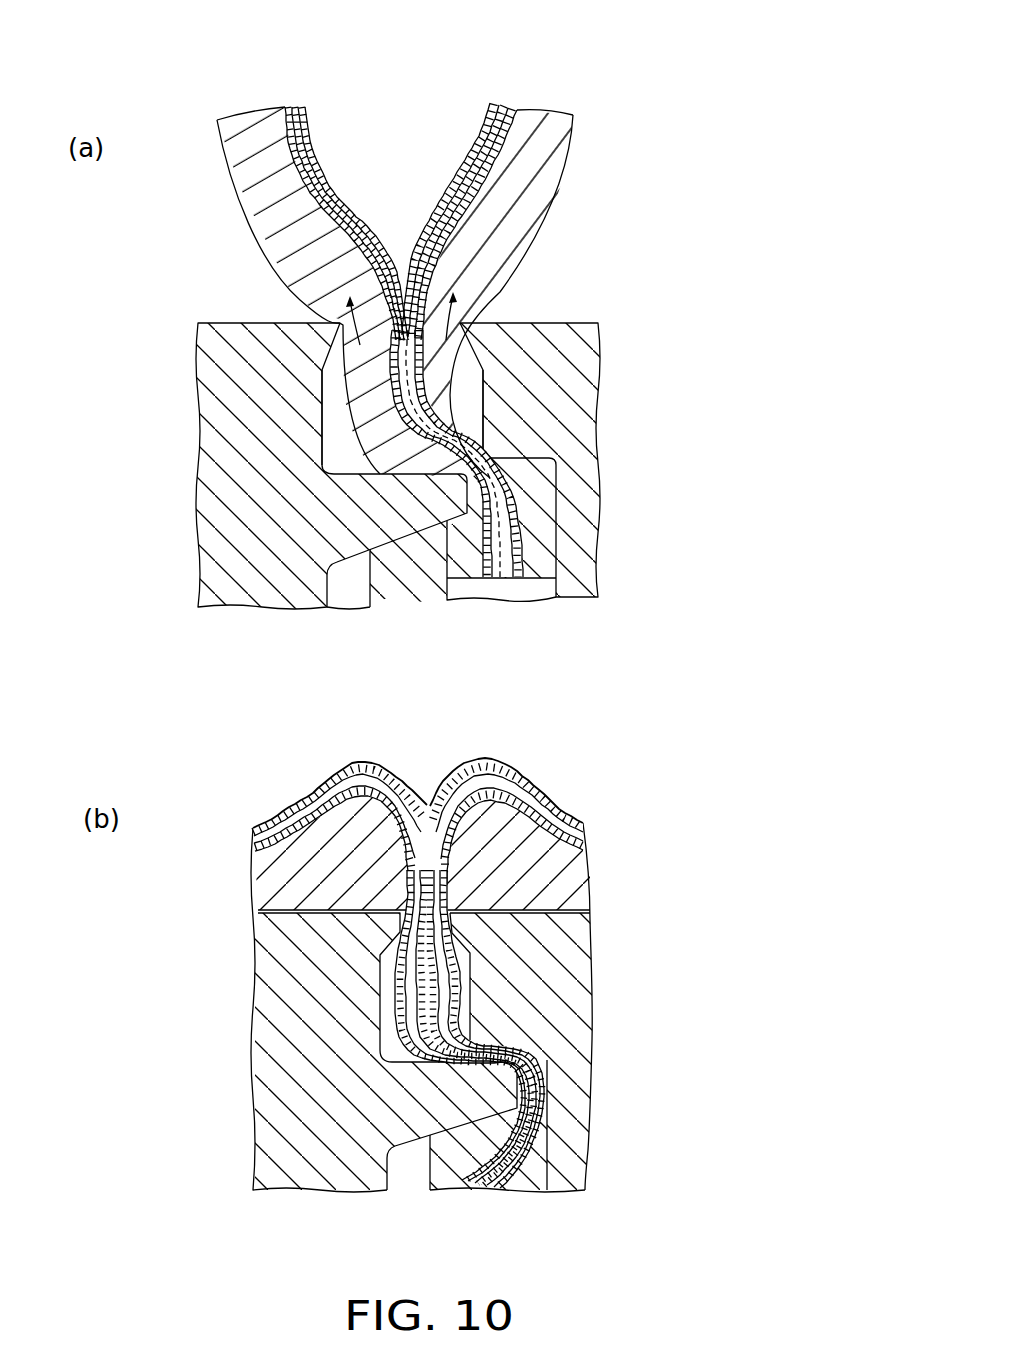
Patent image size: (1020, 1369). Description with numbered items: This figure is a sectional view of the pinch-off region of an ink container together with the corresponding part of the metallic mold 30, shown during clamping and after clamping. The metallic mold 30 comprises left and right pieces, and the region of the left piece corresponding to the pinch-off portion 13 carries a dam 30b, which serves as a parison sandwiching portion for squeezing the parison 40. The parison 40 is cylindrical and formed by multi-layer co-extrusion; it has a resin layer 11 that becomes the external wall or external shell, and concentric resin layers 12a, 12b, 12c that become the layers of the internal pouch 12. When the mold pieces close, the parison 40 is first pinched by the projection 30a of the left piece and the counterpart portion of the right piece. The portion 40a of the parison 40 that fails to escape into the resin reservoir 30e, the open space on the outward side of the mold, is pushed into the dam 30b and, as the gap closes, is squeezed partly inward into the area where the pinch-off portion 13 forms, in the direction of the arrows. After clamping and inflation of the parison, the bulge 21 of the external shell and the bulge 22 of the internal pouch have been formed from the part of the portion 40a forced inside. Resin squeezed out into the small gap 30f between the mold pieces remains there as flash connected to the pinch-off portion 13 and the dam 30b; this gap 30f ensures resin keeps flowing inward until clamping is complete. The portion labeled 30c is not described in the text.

The resin layer 11 is at (553, 110).
The internal pouch 12 is at (597, 10).
The resin layer 12a is at (517, 100).
The resin layer 12b is at (507, 100).
The resin layer 12c is at (497, 100).
The pinch-off portion 13 is at (403, 904).
The bulge of the external shell 21 is at (363, 823).
The bulge of the internal pouch 22 is at (360, 762).
The metallic mold 30 is at (590, 323).
The projection 30a is at (413, 528).
The dam 30b is at (343, 450).
The upper die 30c is at (343, 321).
The resin reservoir 30e is at (537, 589).
The gap 30f is at (431, 802).
The parison 40 is at (640, 108).
The portion of the parison 40a is at (453, 377).